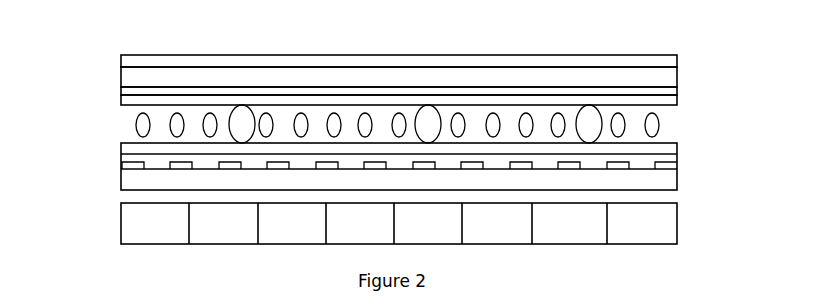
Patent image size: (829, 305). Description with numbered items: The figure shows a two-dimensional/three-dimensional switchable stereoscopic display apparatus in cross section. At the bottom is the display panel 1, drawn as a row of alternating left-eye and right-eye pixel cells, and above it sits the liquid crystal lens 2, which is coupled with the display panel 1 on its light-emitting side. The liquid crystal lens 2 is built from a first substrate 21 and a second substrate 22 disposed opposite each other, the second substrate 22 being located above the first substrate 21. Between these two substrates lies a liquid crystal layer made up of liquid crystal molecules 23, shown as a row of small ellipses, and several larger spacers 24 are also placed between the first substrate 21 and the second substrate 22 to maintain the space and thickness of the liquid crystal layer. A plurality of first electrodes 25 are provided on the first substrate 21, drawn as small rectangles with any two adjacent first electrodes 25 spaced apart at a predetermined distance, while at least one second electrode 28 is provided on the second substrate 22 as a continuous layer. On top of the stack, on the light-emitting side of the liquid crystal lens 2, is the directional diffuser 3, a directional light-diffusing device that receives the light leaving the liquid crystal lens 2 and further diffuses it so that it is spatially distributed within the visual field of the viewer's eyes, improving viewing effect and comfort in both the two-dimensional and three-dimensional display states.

The display panel 1 is at (667, 227).
The liquid crystal lens 2 is at (680, 136).
The directional diffuser 3 is at (668, 63).
The first substrate 21 is at (128, 182).
The second substrate 22 is at (121, 78).
The liquid crystal molecules 23 is at (136, 125).
The spacers 24 is at (247, 118).
The first electrode 25 is at (127, 164).
The second electrode 28 is at (126, 93).